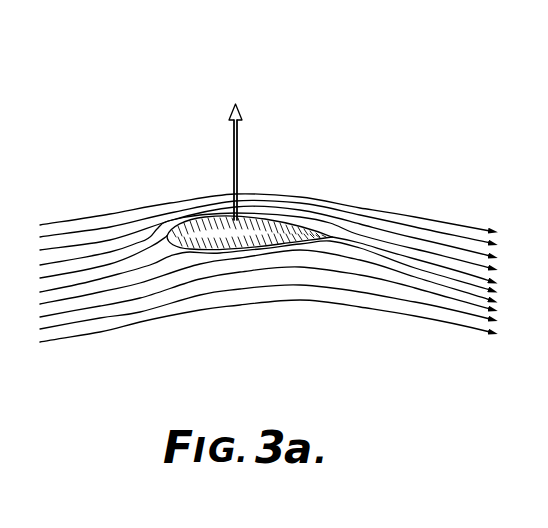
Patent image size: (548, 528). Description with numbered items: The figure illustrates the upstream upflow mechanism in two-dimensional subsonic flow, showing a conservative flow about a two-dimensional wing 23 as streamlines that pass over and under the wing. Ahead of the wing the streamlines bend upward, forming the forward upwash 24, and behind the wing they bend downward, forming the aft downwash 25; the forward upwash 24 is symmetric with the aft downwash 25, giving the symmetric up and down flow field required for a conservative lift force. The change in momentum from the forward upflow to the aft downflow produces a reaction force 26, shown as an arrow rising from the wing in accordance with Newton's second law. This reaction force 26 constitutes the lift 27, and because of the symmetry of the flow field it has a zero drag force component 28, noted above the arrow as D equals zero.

The two-dimensional wing 23 is at (280, 222).
The forward upwash 24 is at (155, 321).
The aft downwash 25 is at (420, 318).
The reaction force 26 is at (238, 158).
The lift 27 is at (233, 165).
The zero drag force component 28 is at (220, 60).